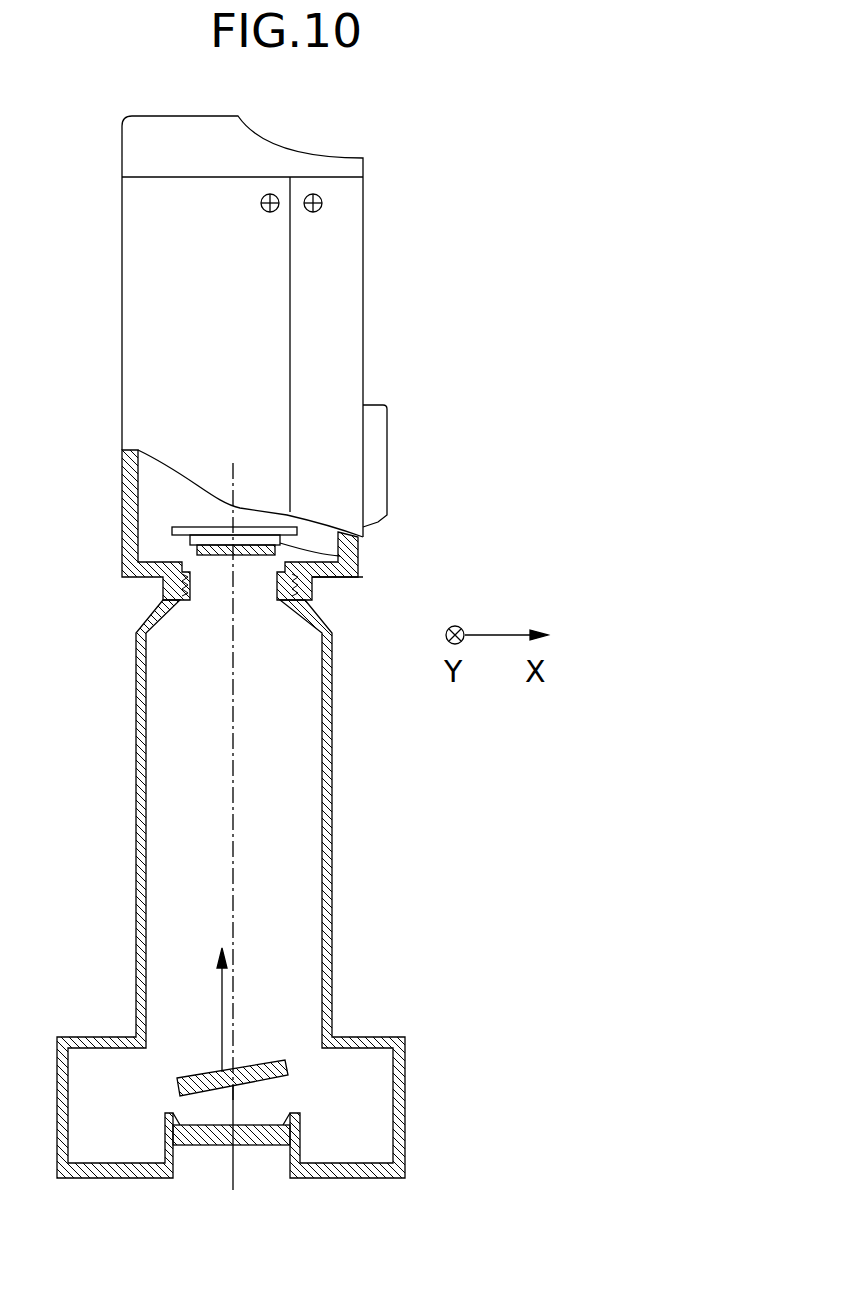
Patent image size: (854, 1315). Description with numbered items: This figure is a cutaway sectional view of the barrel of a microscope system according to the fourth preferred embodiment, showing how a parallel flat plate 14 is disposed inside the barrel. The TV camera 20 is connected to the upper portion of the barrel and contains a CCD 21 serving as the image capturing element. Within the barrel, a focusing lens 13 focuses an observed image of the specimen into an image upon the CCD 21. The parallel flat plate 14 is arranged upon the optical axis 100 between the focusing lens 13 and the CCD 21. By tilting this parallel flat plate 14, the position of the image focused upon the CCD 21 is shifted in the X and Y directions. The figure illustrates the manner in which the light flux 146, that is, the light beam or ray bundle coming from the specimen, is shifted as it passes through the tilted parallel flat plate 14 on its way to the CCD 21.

The TV camera 20 is at (348, 247).
The CCD 21 is at (358, 557).
The optical axis 100 is at (233, 743).
The light flux 146 is at (215, 1000).
The parallel flat plate 14 is at (253, 1062).
The focusing lens 13 is at (260, 1147).